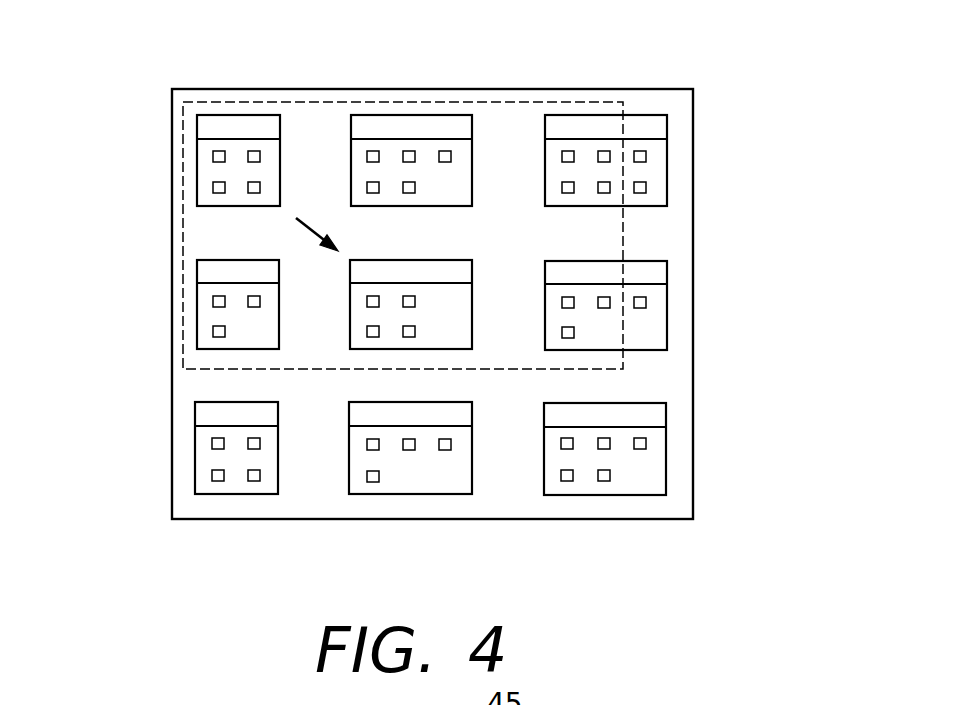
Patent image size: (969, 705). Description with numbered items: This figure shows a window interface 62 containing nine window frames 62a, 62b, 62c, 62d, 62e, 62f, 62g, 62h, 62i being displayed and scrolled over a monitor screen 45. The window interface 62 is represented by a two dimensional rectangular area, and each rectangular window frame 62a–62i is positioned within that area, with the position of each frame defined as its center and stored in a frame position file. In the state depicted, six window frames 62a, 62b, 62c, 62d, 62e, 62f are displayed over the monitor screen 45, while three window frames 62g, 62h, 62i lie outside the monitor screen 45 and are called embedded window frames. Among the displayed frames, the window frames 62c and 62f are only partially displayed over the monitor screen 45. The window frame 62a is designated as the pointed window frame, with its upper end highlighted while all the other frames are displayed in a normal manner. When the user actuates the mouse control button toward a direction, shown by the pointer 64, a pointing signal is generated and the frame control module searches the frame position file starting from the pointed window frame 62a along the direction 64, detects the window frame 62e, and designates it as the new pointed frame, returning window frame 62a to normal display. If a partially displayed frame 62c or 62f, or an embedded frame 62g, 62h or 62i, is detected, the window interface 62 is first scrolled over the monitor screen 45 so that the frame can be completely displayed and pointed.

The window interface 62 is at (642, 89).
The monitor screen 45 is at (322, 102).
The window frame 62a is at (195, 172).
The window frame 62b is at (420, 115).
The window frame 62c is at (667, 161).
The window frame 62d is at (195, 315).
The window frame 62e is at (385, 260).
The window frame 62f is at (667, 315).
The window frame 62g is at (195, 460).
The window frame 62h is at (412, 494).
The window frame 62i is at (666, 448).
The pointer 64 is at (305, 222).